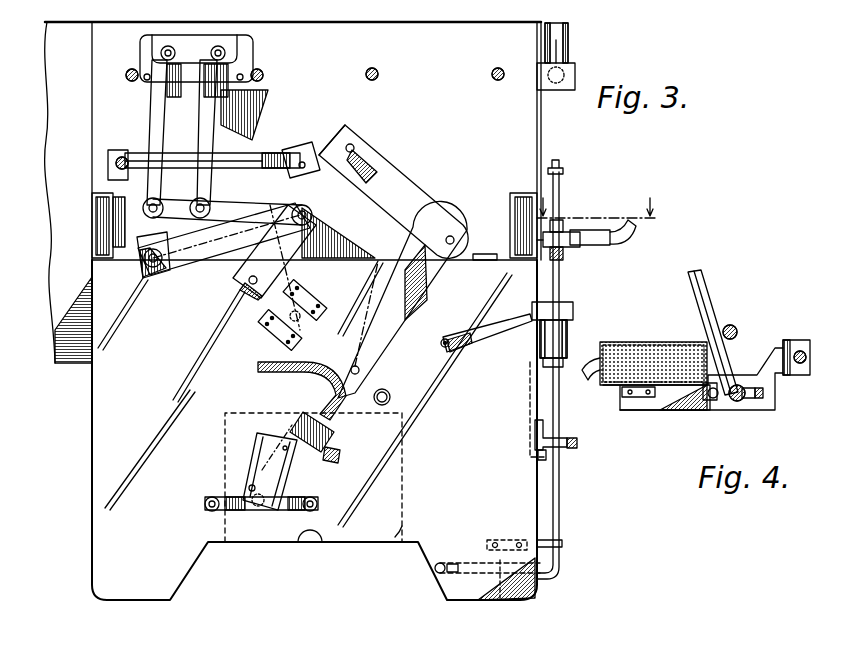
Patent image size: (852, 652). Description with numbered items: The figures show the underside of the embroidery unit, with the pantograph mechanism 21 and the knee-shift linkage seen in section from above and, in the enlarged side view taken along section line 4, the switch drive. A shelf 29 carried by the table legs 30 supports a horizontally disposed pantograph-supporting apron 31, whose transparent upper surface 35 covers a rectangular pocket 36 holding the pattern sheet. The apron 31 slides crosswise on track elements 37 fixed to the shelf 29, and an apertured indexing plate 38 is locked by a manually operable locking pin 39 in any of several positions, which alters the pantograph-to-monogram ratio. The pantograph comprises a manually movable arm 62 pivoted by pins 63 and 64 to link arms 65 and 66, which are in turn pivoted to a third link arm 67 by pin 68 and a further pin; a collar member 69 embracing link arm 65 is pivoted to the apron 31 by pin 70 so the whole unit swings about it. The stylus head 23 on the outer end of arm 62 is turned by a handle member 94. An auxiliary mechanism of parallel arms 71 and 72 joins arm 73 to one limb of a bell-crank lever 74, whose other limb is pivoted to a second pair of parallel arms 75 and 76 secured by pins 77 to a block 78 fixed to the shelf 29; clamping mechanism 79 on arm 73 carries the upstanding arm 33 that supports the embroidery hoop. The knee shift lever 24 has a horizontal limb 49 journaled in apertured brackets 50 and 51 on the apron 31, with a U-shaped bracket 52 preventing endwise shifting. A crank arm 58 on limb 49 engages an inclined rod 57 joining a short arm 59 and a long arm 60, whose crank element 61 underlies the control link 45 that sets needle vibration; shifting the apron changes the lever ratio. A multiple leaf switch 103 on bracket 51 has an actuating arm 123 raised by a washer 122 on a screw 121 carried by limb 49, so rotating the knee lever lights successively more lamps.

In FIG. 3, the section line 4— 4 is at (595, 200).
In FIG. 3, the pantograph mechanism 21 is at (413, 342).
In FIG. 3, the stylus head 23 is at (236, 474).
In FIG. 3, the knee shift lever 24 is at (437, 575).
In FIG. 3, the shelf 29 is at (441, 87).
In FIG. 3, the table legs 30 is at (575, 58).
In FIG. 3, the pantograph-supporting apron 31 is at (155, 600).
In FIG. 4, the pantograph-supporting apron 31 is at (797, 338).
In FIG. 3, the arm 33 is at (128, 152).
In FIG. 3, the upper surface 35 is at (262, 534).
In FIG. 3, the rectangular pocket 36 is at (400, 527).
In FIG. 3, the track elements 37 is at (95, 218).
In FIG. 3, the apertured indexing plate 38 is at (530, 412).
In FIG. 3, the locking pin 39 is at (560, 447).
In FIG. 3, the control link 45 is at (447, 339).
In FIG. 3, the horizontal limb 49 is at (561, 518).
In FIG. 4, the horizontal limb 49 is at (735, 402).
In FIG. 3, the apertured bracket 50 is at (563, 545).
In FIG. 3, the apertured bracket 51 is at (503, 262).
In FIG. 4, the apertured bracket 51 is at (770, 398).
In FIG. 3, the U-shaped bracket 52 is at (503, 565).
In FIG. 3, the rod 57 is at (565, 288).
In FIG. 4, the rod 57 is at (738, 328).
In FIG. 3, the crank arm 58 is at (568, 228).
In FIG. 4, the crank arm 58 is at (712, 300).
In FIG. 3, the short arm 59 is at (575, 317).
In FIG. 3, the long arm 60 is at (560, 170).
In FIG. 3, the crank element 61 is at (487, 338).
In FIG. 3, the manually movable arm 62 is at (335, 432).
In FIG. 3, the pin 63 is at (357, 365).
In FIG. 3, the pin 64 is at (458, 241).
In FIG. 3, the link arm 65 is at (331, 327).
In FIG. 3, the link arm 66 is at (403, 187).
In FIG. 3, the third link arm 67 is at (328, 160).
In FIG. 3, the pin 68 is at (237, 283).
In FIG. 3, the collar member 69 is at (354, 147).
In FIG. 3, the pin 70 is at (302, 291).
In FIG. 3, the parallel arm 71 is at (193, 260).
In FIG. 3, the parallel arm 72 is at (295, 150).
In FIG. 3, the arm 73 is at (312, 214).
In FIG. 3, the bell-crank lever 74 is at (147, 240).
In FIG. 3, the parallel arm 75 is at (157, 112).
In FIG. 3, the parallel arm 76 is at (203, 142).
In FIG. 3, the pins 77 is at (160, 53).
In FIG. 3, the block 78 is at (248, 34).
In FIG. 3, the clamping mechanism 79 is at (108, 157).
In FIG. 3, the handle member 94 is at (300, 498).
In FIG. 3, the multiple leaf switch 103 is at (599, 231).
In FIG. 4, the multiple leaf switch 103 is at (669, 333).
In FIG. 3, the screw 121 is at (562, 225).
In FIG. 4, the screw 121 is at (759, 400).
In FIG. 4, the washer 122 is at (708, 400).
In FIG. 4, the actuating arm 123 is at (720, 381).